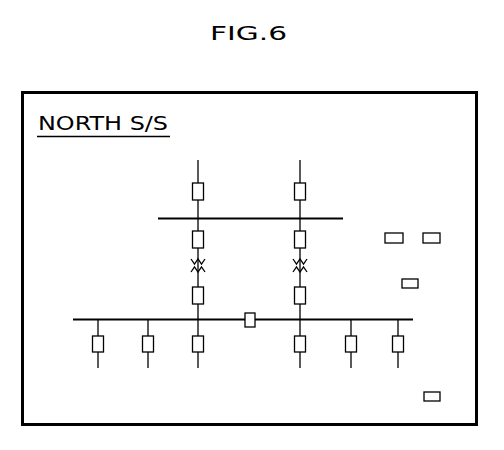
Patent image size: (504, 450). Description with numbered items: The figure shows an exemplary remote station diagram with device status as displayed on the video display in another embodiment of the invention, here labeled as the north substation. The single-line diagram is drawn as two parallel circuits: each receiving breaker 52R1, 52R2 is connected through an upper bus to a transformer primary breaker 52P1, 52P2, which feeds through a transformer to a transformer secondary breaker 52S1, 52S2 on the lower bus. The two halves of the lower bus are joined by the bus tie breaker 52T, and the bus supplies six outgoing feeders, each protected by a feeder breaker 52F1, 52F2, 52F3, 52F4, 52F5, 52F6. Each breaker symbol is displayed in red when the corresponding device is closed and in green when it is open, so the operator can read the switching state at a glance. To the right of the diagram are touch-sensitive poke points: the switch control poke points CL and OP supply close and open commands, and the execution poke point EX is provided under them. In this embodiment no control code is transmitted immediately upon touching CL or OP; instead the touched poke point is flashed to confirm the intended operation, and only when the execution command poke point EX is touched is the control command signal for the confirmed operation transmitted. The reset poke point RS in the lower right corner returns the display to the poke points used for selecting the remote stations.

The receiving breaker 52R1 is at (213, 192).
The receiving breaker 52R2 is at (315, 192).
The transformer primary breaker 52P1 is at (213, 244).
The transformer primary breaker 52P2 is at (315, 244).
The transformer secondary breaker 52S1 is at (213, 300).
The transformer secondary breaker 52S2 is at (315, 300).
The bus tie breaker 52T is at (259, 304).
The feeder breaker 52F1 is at (112, 343).
The feeder breaker 52F2 is at (162, 343).
The feeder breaker 52F3 is at (212, 343).
The feeder breaker 52F4 is at (314, 343).
The feeder breaker 52F5 is at (364, 343).
The feeder breaker 52F6 is at (412, 343).
The switch control poke point CL is at (390, 226).
The switch control poke point OP is at (431, 226).
The execution command poke point EX is at (410, 272).
The reset poke point RS is at (431, 386).